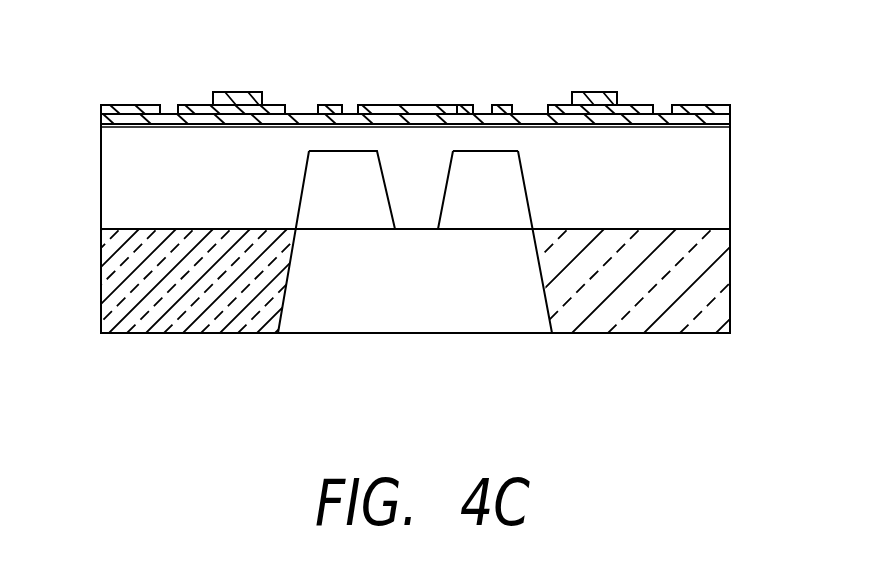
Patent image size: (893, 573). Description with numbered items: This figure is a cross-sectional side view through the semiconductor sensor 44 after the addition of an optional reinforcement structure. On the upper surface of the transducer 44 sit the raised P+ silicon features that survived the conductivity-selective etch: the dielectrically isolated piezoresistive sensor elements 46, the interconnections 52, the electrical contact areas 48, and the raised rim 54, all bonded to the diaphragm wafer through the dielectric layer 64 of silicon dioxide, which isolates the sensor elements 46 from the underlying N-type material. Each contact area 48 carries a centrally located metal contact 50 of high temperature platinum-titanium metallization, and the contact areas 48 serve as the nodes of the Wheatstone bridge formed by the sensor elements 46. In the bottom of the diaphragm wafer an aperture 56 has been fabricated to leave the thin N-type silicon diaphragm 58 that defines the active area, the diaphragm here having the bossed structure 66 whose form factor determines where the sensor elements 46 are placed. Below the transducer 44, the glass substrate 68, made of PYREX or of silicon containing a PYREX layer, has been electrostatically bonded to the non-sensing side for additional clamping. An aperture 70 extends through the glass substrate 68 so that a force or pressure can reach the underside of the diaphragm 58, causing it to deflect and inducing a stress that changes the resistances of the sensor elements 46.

The semiconductor sensor 44 is at (732, 176).
The piezoresistive sensor elements 46 is at (357, 105).
The electrical contact areas 48 is at (193, 105).
The metal contacts 50 is at (230, 92).
The interconnections 52 is at (433, 103).
The raised rim 54 is at (146, 105).
The aperture 56 is at (377, 207).
The diaphragm 58 is at (370, 135).
The dielectric layer 64 is at (713, 127).
The bossed structure 66 is at (449, 197).
The glass substrate 68 is at (101, 288).
The aperture 70 is at (455, 315).